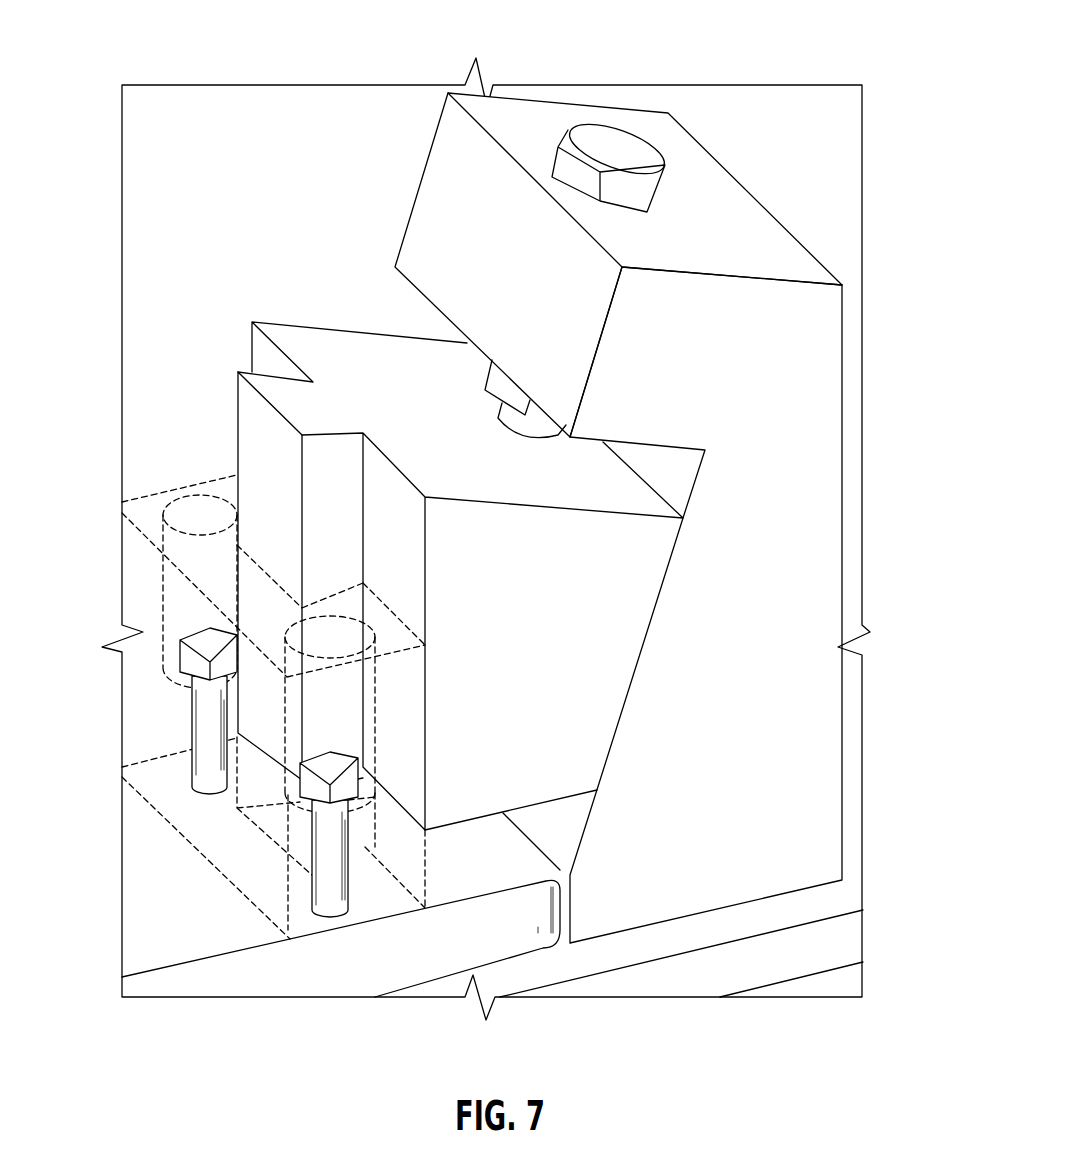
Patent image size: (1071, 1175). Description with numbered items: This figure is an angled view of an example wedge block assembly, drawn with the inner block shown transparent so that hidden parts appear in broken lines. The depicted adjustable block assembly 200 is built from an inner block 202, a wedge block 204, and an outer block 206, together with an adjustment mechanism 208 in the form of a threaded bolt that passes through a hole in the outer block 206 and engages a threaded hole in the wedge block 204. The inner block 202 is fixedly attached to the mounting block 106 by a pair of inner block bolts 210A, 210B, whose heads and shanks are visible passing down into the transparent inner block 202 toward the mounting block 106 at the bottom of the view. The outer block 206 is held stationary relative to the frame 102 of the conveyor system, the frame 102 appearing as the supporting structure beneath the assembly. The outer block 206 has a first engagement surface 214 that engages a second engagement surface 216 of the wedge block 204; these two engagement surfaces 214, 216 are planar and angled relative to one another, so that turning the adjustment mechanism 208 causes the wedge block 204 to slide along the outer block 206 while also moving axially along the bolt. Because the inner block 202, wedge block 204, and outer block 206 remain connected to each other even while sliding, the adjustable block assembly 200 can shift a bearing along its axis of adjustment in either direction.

The frame 102 is at (760, 912).
The mounting block 106 is at (190, 920).
The adjustable block assembly 200 is at (848, 603).
The inner block 202 is at (148, 583).
The wedge block 204 is at (270, 383).
The outer block 206 is at (448, 183).
The adjustment mechanism 208 is at (588, 163).
The inner block bolt 210A is at (325, 873).
The inner block bolt 210B is at (210, 727).
The first engagement surface 214 is at (683, 473).
The second engagement surface 216 is at (273, 482).